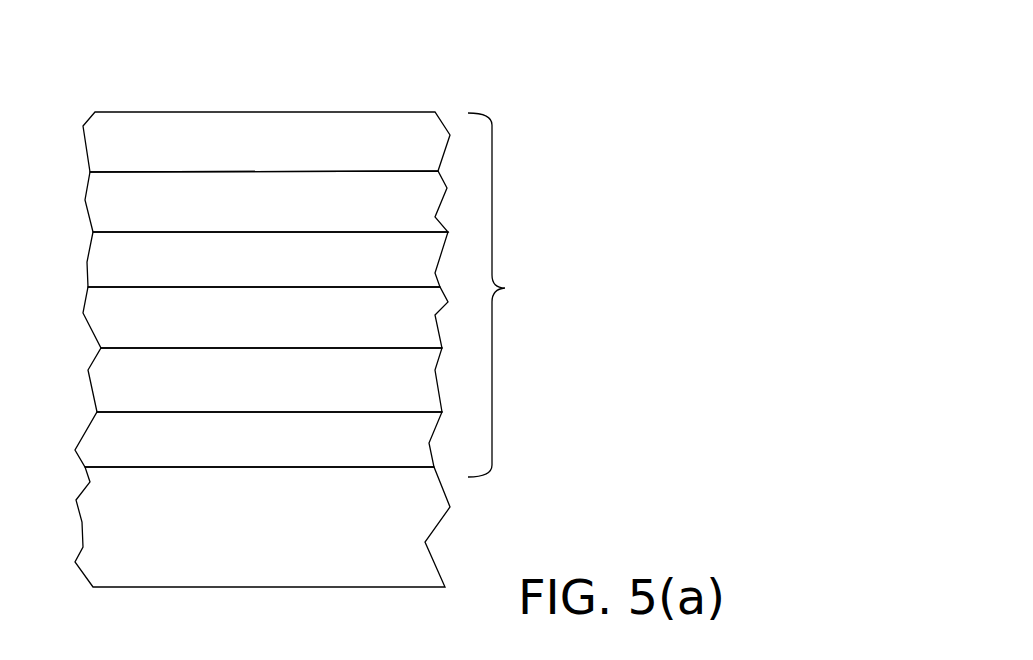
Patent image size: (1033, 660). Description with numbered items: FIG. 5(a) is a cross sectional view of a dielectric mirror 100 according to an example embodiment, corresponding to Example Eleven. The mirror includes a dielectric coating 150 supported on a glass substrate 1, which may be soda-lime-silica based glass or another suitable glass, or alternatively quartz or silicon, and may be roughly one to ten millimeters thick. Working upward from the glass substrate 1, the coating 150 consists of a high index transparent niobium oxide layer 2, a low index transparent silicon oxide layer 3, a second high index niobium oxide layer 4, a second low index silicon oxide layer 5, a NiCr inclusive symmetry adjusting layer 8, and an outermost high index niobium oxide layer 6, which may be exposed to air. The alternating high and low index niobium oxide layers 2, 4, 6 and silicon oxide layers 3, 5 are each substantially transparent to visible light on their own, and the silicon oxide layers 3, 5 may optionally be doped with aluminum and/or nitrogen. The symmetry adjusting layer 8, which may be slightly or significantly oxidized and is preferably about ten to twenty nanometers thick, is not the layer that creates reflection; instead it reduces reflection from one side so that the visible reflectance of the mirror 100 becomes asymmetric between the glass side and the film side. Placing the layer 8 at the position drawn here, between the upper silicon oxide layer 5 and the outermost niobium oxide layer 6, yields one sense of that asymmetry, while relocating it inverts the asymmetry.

The dielectric mirror 100 is at (604, 154).
The dielectric coating 150 is at (507, 288).
The glass substrate 1 is at (101, 515).
The niobium oxide layer 2 is at (101, 433).
The silicon oxide layer 3 is at (101, 379).
The niobium oxide layer 4 is at (115, 322).
The silicon oxide layer 5 is at (105, 259).
The symmetry adjusting layer 8 is at (103, 202).
The niobium oxide layer 6 is at (105, 143).